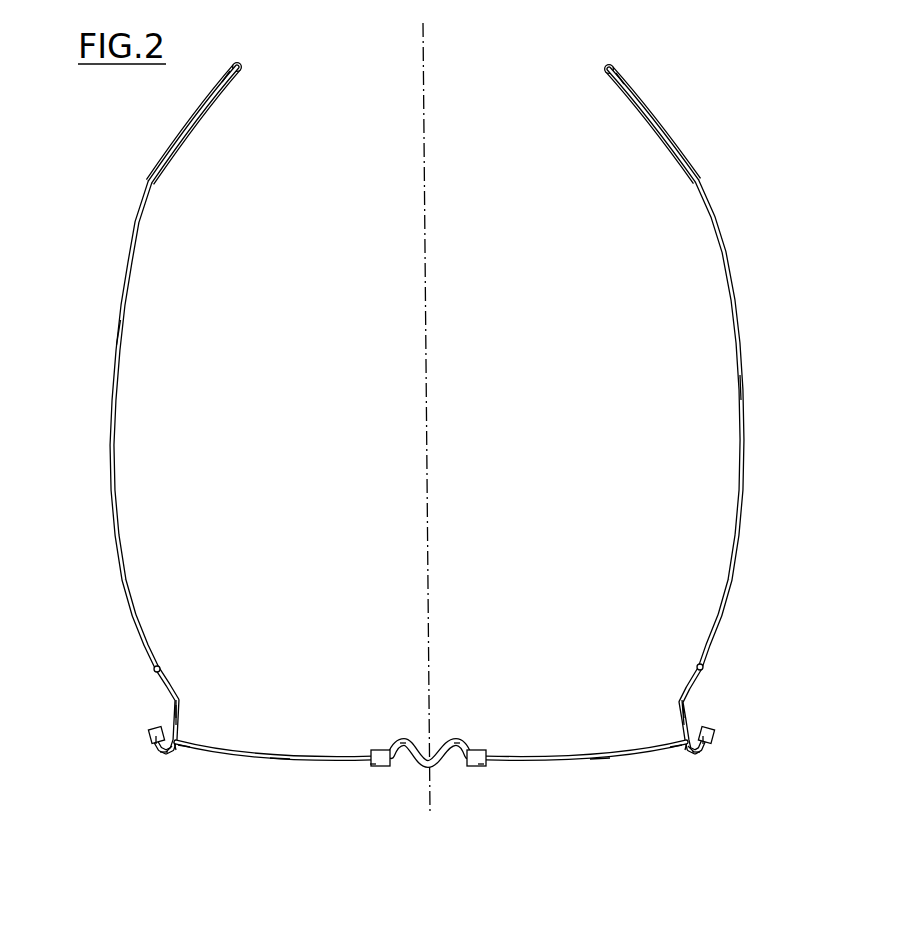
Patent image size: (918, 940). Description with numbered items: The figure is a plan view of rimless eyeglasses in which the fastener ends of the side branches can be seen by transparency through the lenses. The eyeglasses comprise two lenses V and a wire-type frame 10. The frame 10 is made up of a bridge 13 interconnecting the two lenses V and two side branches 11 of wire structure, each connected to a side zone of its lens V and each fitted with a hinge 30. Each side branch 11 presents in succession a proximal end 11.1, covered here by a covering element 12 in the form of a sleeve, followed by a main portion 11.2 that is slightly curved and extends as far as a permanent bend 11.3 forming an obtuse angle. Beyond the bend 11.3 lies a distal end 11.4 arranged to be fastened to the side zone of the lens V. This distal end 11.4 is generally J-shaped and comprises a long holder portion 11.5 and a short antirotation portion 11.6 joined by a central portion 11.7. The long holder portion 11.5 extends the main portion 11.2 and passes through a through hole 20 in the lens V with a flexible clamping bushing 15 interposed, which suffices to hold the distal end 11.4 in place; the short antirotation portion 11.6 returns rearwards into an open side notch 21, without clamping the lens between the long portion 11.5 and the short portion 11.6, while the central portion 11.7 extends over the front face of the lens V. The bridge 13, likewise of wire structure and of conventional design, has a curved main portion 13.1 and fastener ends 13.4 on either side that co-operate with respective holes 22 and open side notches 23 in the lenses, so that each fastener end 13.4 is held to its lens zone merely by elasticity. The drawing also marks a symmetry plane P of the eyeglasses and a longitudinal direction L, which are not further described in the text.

The frame 10 is at (80, 270).
The side branch 11 is at (429, 431).
The proximal end 11.1 is at (228, 82).
The main portion 11.2 is at (122, 333).
The permanent bend 11.3 is at (180, 700).
The distal end 11.4 is at (150, 750).
The long holder portion 11.5 is at (185, 715).
The short antirotation portion 11.6 is at (152, 742).
The central portion 11.7 is at (166, 752).
The covering element 12 is at (180, 128).
The bridge 13 is at (431, 747).
The curved main portion 13.1 is at (438, 740).
The fastener end 13.4 is at (372, 766).
The flexible clamping bushing 15 is at (180, 752).
The through hole 20 is at (182, 742).
The open side notch 21 is at (152, 730).
The hole 22 is at (377, 750).
The open side notch 23 is at (402, 745).
The hinge 30 is at (159, 667).
The plane of symmetry P is at (425, 103).
The longitudinal direction L is at (533, 108).
The lens V is at (278, 752).